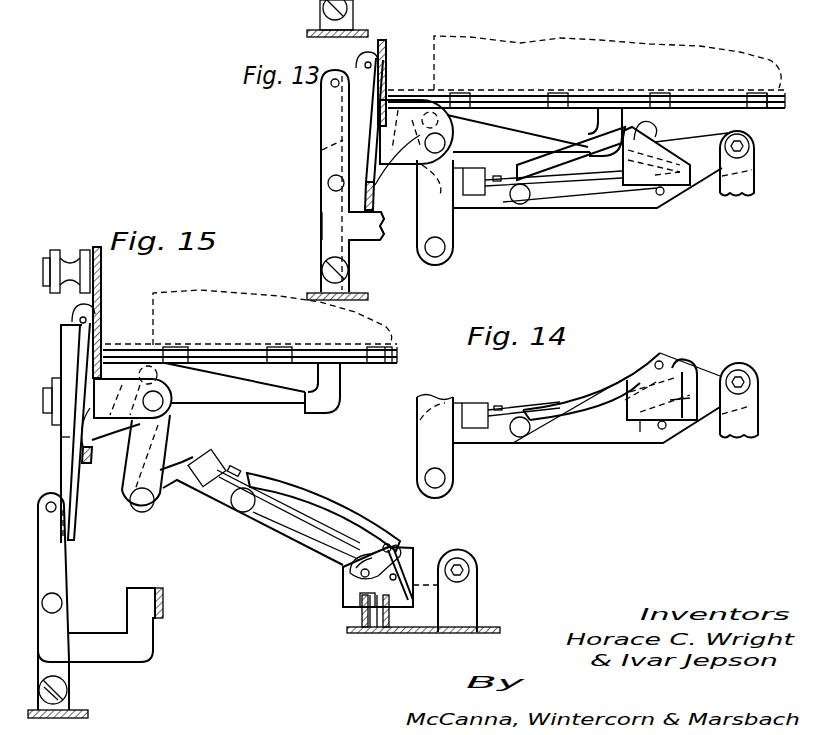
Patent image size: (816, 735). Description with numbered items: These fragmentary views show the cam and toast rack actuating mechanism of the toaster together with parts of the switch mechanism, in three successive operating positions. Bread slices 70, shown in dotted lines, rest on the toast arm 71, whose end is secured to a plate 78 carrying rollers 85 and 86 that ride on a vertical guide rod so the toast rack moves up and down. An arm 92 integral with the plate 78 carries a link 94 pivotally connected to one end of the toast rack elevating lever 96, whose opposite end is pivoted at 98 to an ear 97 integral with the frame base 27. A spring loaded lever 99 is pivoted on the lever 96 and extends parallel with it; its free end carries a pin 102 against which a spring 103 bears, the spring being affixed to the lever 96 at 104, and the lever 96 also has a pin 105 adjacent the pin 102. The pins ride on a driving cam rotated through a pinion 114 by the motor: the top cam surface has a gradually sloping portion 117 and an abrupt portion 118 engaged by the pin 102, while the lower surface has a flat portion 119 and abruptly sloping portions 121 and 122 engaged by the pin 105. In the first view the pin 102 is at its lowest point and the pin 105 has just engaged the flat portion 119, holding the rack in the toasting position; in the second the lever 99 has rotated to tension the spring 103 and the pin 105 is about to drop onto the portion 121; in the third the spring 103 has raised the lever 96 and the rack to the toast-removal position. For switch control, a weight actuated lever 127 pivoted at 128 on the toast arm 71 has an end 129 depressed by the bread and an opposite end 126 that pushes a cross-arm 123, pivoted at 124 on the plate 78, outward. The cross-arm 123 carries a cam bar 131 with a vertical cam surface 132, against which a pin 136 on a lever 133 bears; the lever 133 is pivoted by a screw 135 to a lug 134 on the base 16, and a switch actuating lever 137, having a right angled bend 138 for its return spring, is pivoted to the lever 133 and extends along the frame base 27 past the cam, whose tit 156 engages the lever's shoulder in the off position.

In FIG. 13, the base 16 is at (366, 30).
In FIG. 15, the base 16 is at (80, 718).
In FIG. 15, the frame base 27 is at (489, 627).
In FIG. 13, the bread slices 70 is at (570, 52).
In FIG. 15, the bread slices 70 is at (207, 303).
In FIG. 13, the toast arm 71 is at (762, 106).
In FIG. 15, the toast arm 71 is at (379, 364).
In FIG. 13, the plate 78 is at (386, 48).
In FIG. 15, the plate 78 is at (103, 268).
In FIG. 15, the roller 85 is at (72, 252).
In FIG. 15, the roller 86 is at (48, 380).
In FIG. 13, the arm 92 is at (416, 132).
In FIG. 15, the arm 92 is at (133, 398).
In FIG. 13, the link 94 is at (435, 212).
In FIG. 14, the link 94 is at (435, 447).
In FIG. 15, the link 94 is at (146, 463).
In FIG. 13, the toast rack elevating lever 96 is at (505, 220).
In FIG. 14, the toast rack elevating lever 96 is at (527, 392).
In FIG. 15, the toast rack elevating lever 96 is at (283, 485).
In FIG. 13, the ear 97 is at (737, 163).
In FIG. 14, the ear 97 is at (739, 400).
In FIG. 15, the ear 97 is at (457, 591).
In FIG. 13, the pivot 98 is at (750, 146).
In FIG. 14, the pivot 98 is at (750, 370).
In FIG. 15, the pivot 98 is at (473, 568).
In FIG. 13, the spring loaded lever 99 is at (552, 200).
In FIG. 14, the spring loaded lever 99 is at (620, 364).
In FIG. 15, the spring loaded lever 99 is at (330, 520).
In FIG. 13, the pin 102 is at (678, 185).
In FIG. 14, the pin 102 is at (664, 362).
In FIG. 15, the pin 102 is at (394, 546).
In FIG. 13, the spring 103 is at (594, 190).
In FIG. 14, the spring 103 is at (580, 397).
In FIG. 15, the spring 103 is at (352, 533).
In FIG. 13, the spring attachment 104 is at (473, 196).
In FIG. 14, the spring attachment 104 is at (473, 408).
In FIG. 15, the spring attachment 104 is at (213, 460).
In FIG. 13, the pin 105 is at (661, 196).
In FIG. 14, the pin 105 is at (664, 430).
In FIG. 15, the pin 105 is at (360, 574).
In FIG. 15, the pinion 114 is at (382, 628).
In FIG. 13, the gradually sloping cam portion 117 is at (649, 125).
In FIG. 14, the gradually sloping cam portion 117 is at (621, 408).
In FIG. 15, the gradually sloping cam portion 117 is at (356, 586).
In FIG. 13, the abruptly sloping cam portion 118 is at (648, 137).
In FIG. 14, the abruptly sloping cam portion 118 is at (700, 376).
In FIG. 15, the abruptly sloping cam portion 118 is at (412, 552).
In FIG. 14, the flat cam portion 119 is at (640, 422).
In FIG. 14, the abruptly sloping cam portion 121 is at (680, 405).
In FIG. 15, the abruptly sloping cam portion 121 is at (340, 558).
In FIG. 14, the abruptly sloping cam portion 122 is at (694, 366).
In FIG. 15, the abruptly sloping cam portion 122 is at (405, 582).
In FIG. 13, the cross-arm 123 is at (382, 220).
In FIG. 13, the pivotal support 124 is at (355, 63).
In FIG. 15, the pivotal support 124 is at (83, 313).
In FIG. 13, the end of weight actuated lever 126 is at (376, 190).
In FIG. 15, the end of weight actuated lever 126 is at (104, 431).
In FIG. 13, the weight actuated lever 127 is at (518, 133).
In FIG. 15, the weight actuated lever 127 is at (235, 383).
In FIG. 13, the pivot 128 is at (430, 112).
In FIG. 13, the end of weight actuated lever 129 is at (612, 96).
In FIG. 15, the end of weight actuated lever 129 is at (146, 366).
In FIG. 13, the cam bar 131 is at (345, 110).
In FIG. 15, the cam bar 131 is at (61, 342).
In FIG. 13, the cam surface 132 is at (322, 148).
In FIG. 15, the cam surface 132 is at (61, 437).
In FIG. 13, the lever 133 is at (322, 236).
In FIG. 15, the lever 133 is at (62, 553).
In FIG. 13, the lug 134 is at (320, 14).
In FIG. 15, the lug 134 is at (68, 704).
In FIG. 13, the screw 135 is at (322, 268).
In FIG. 15, the screw 135 is at (66, 688).
In FIG. 13, the pin 136 is at (330, 86).
In FIG. 15, the pin 136 is at (50, 503).
In FIG. 13, the switch actuating lever 137 is at (372, 240).
In FIG. 15, the switch actuating lever 137 is at (96, 625).
In FIG. 15, the right angled bend 138 is at (163, 606).
In FIG. 15, the tit 156 is at (362, 605).